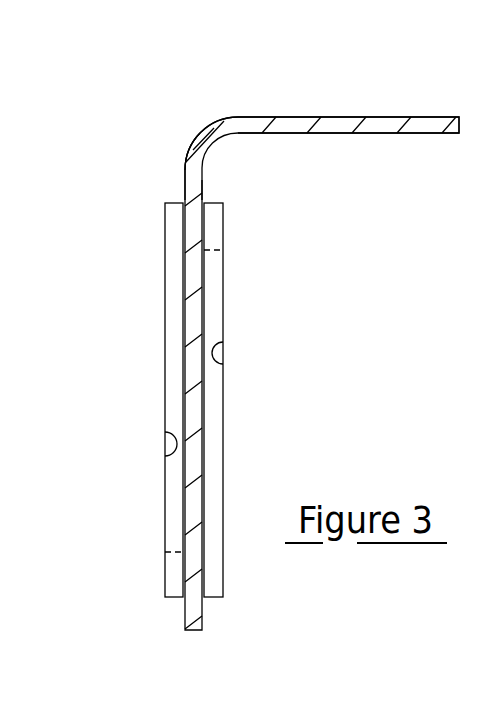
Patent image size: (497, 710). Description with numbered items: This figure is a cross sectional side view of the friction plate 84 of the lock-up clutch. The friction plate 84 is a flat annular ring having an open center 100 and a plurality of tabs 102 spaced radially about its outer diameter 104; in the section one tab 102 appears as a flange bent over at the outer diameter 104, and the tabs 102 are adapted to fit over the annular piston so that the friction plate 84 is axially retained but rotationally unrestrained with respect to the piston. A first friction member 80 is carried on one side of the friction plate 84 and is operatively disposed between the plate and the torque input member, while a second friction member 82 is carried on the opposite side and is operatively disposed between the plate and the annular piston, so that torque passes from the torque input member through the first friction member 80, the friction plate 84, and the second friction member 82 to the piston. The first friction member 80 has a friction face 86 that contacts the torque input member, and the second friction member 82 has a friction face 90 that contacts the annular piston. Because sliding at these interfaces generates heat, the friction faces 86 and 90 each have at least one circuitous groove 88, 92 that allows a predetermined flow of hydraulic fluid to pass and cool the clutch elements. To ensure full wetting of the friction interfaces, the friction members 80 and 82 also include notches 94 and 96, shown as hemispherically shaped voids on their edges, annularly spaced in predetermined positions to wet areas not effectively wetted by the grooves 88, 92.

The first friction member 80 is at (175, 203).
The second friction member 82 is at (210, 203).
The friction plate 84 is at (185, 172).
The friction face 86 is at (165, 327).
The circuitous groove 88 is at (165, 445).
The friction face 90 is at (223, 425).
The circuitous groove 92 is at (223, 353).
The notch 94 is at (165, 570).
The notch 96 is at (223, 229).
The open center 100 is at (212, 676).
The tab 102 is at (378, 116).
The outer diameter 104 is at (196, 135).